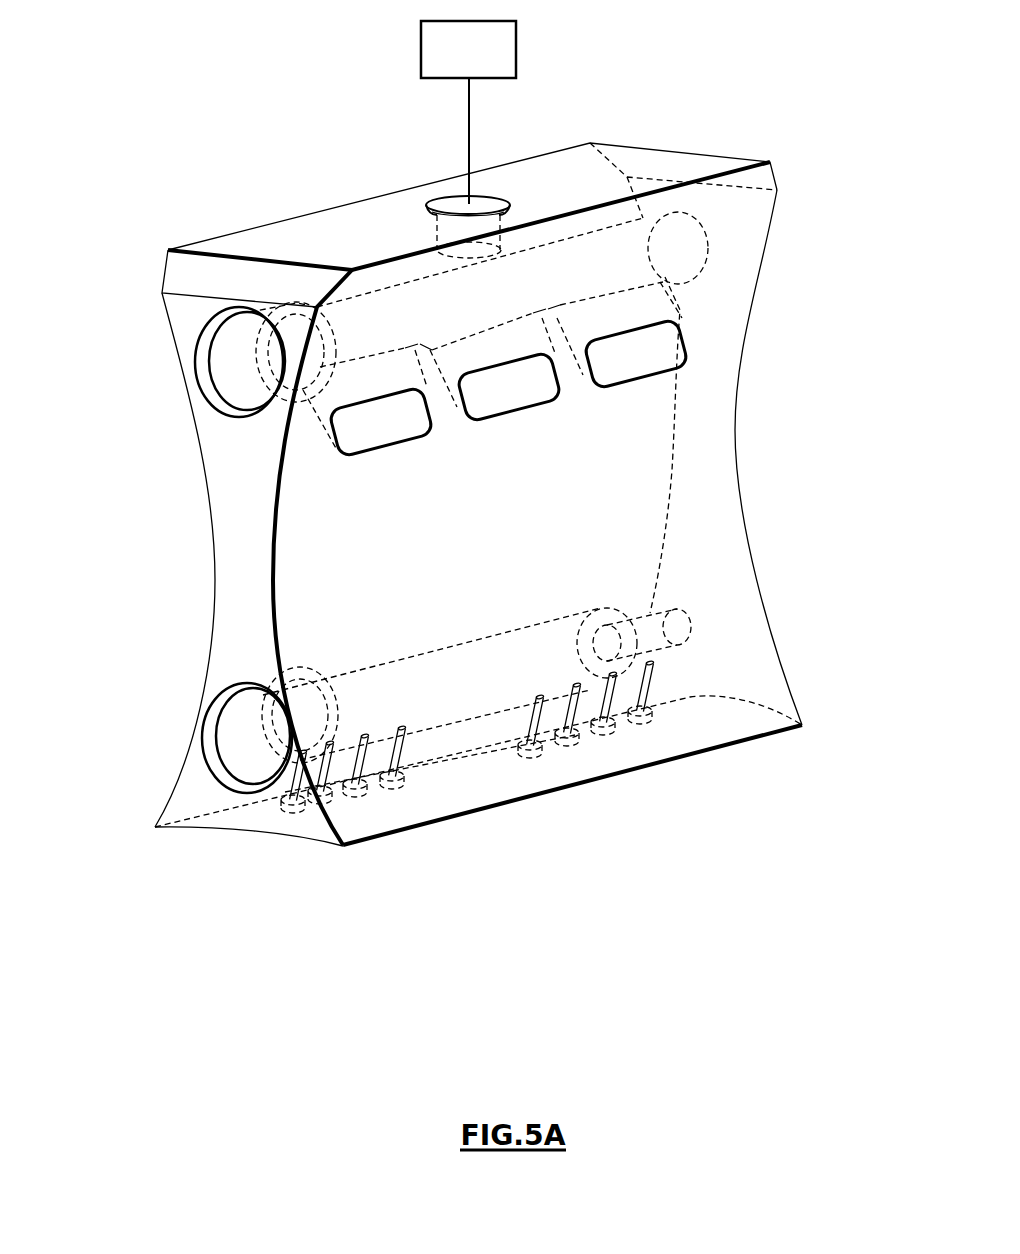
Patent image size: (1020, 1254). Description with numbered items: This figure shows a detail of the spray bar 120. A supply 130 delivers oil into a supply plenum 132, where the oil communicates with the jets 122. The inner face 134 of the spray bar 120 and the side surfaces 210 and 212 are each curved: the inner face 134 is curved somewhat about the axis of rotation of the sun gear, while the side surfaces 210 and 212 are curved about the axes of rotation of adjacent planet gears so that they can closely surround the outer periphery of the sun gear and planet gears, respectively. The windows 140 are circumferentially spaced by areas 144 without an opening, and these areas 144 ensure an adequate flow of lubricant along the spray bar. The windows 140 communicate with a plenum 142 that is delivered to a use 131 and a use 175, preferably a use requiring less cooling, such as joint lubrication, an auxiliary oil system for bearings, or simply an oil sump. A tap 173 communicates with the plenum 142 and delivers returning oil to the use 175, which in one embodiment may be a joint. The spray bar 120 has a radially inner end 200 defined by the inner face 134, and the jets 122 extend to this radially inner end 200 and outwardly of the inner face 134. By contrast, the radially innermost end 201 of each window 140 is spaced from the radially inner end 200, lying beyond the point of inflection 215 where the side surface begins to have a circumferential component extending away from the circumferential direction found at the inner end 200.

The spray bar 120 is at (137, 683).
The jets 122 is at (290, 806).
The supply 130 is at (280, 736).
The use 131 is at (283, 352).
The supply plenum 132 is at (468, 674).
The inner face 134 is at (705, 752).
The windows 140 is at (375, 425).
The plenum 142 is at (372, 328).
The areas without an opening 144 is at (440, 405).
The tap 173 is at (448, 208).
The use 175 is at (516, 48).
The radially inner end 200 is at (493, 808).
The radially innermost end 201 is at (357, 455).
The side surface 210 is at (703, 418).
The side surface 212 is at (212, 593).
The point of inflection 215 is at (275, 552).